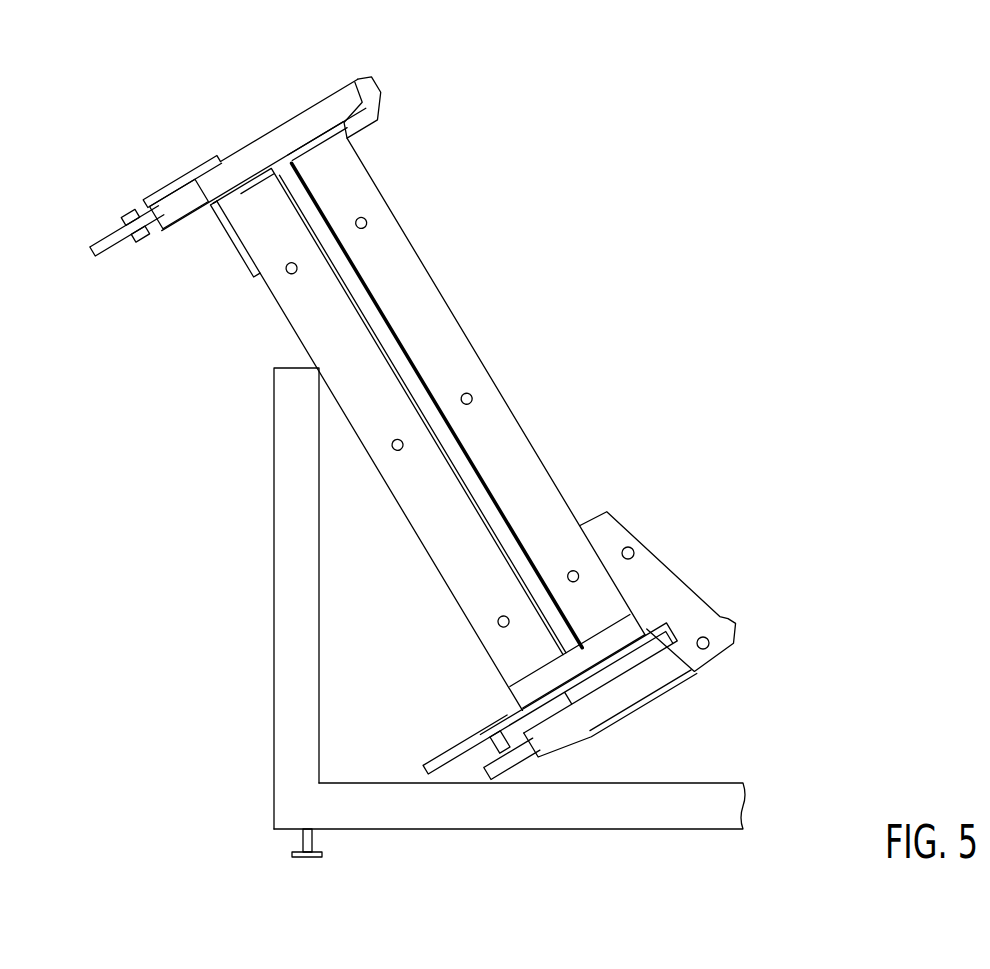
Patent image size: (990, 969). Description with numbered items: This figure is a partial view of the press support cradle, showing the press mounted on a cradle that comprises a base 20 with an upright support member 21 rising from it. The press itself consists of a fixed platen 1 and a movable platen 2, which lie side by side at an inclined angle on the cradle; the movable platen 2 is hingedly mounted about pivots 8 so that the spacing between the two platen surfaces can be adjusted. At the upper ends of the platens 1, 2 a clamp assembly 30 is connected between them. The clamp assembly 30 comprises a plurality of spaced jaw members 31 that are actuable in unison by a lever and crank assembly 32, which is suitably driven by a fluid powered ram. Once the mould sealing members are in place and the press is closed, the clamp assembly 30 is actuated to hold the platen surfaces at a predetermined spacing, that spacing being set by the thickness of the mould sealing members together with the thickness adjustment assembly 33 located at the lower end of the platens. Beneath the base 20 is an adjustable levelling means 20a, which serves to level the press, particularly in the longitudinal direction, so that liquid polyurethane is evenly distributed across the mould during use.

The fixed platen 1 is at (283, 297).
The movable platen 2 is at (468, 365).
The pivots 8 is at (703, 634).
The base 20 is at (580, 825).
The adjustable levelling means 20a is at (305, 858).
The upright support member 21 is at (278, 552).
The clamp assembly 30 is at (250, 107).
The jaw members 31 is at (363, 122).
The lever and crank assembly 32 is at (140, 210).
The thickness adjustment assembly 33 is at (450, 719).